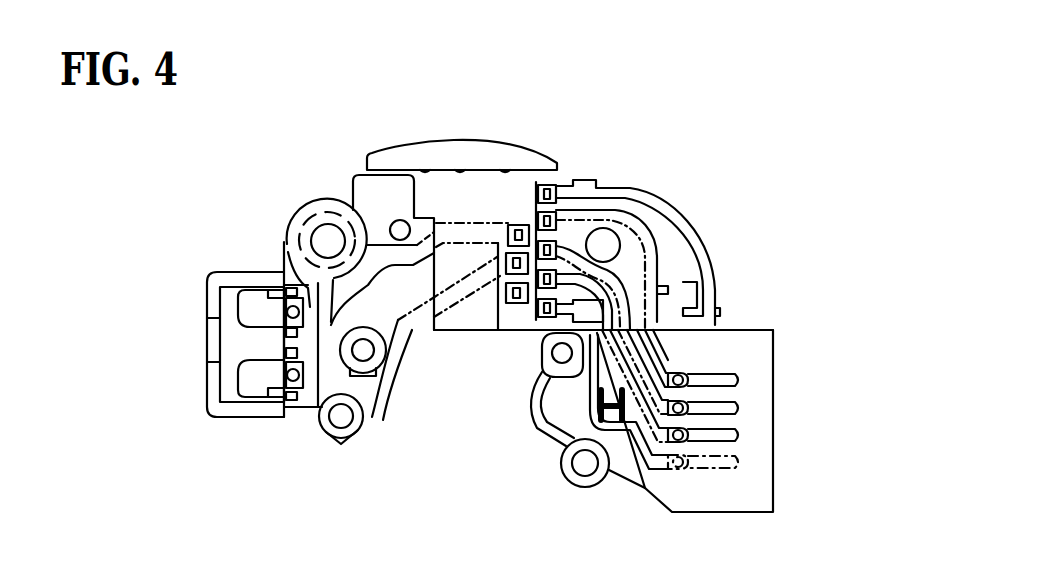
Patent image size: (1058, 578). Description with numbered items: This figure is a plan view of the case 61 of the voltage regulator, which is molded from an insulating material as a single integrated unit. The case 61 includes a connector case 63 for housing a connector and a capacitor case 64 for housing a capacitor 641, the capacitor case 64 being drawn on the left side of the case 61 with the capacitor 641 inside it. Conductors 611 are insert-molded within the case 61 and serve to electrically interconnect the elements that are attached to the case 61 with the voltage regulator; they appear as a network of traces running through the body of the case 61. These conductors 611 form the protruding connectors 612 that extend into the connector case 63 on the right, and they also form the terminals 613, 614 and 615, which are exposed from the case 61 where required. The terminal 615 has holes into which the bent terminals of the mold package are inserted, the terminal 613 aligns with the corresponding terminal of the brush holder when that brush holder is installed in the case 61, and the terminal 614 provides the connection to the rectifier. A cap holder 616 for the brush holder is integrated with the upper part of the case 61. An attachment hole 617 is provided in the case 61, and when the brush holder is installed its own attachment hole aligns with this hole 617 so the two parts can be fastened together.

The case 61 is at (620, 183).
The conductors 611 is at (627, 257).
The protruding connectors 612 is at (750, 442).
The terminal 613 is at (540, 352).
The terminal 614 is at (322, 438).
The terminal 615 is at (514, 222).
The cap holder 616 is at (445, 167).
The attachment hole 617 is at (326, 246).
The connector case 63 is at (740, 360).
The capacitor case 64 is at (242, 287).
The capacitor 641 is at (243, 352).